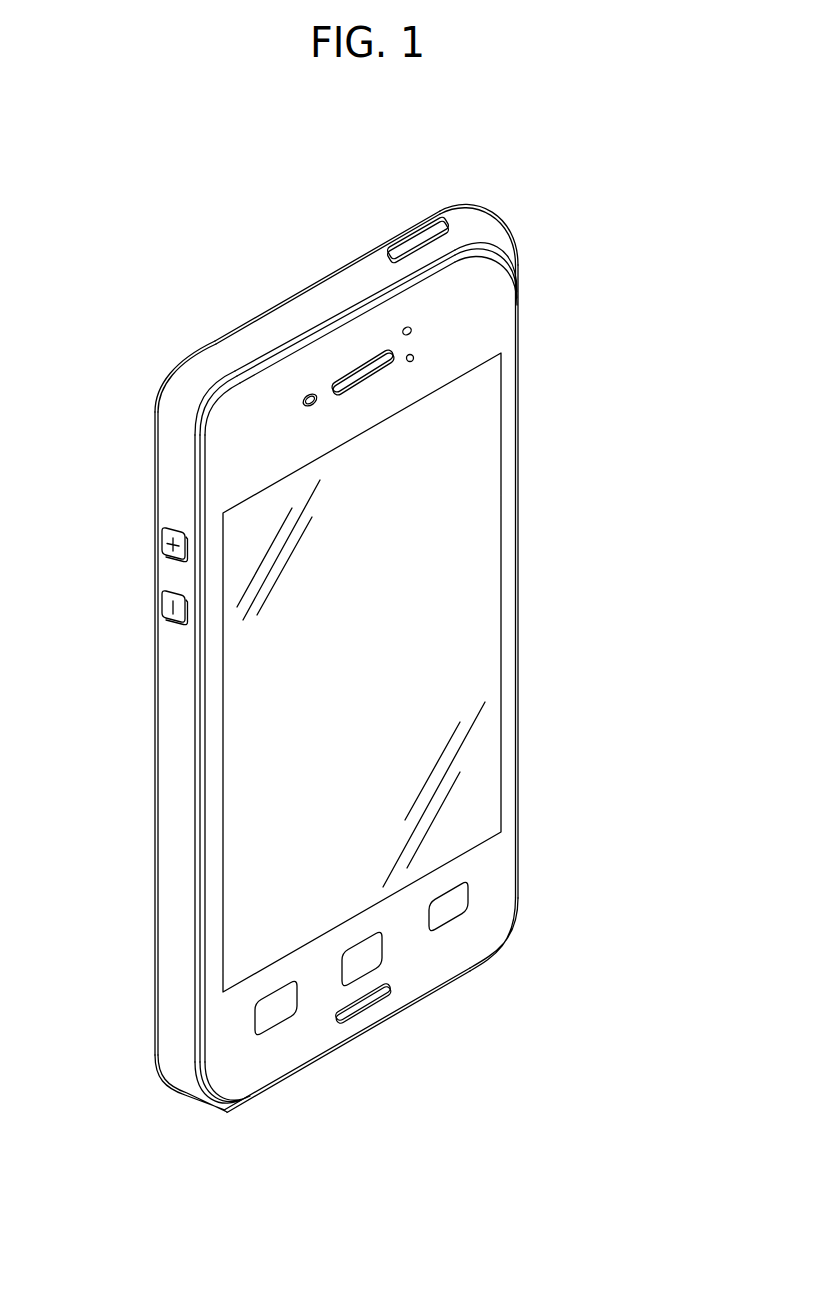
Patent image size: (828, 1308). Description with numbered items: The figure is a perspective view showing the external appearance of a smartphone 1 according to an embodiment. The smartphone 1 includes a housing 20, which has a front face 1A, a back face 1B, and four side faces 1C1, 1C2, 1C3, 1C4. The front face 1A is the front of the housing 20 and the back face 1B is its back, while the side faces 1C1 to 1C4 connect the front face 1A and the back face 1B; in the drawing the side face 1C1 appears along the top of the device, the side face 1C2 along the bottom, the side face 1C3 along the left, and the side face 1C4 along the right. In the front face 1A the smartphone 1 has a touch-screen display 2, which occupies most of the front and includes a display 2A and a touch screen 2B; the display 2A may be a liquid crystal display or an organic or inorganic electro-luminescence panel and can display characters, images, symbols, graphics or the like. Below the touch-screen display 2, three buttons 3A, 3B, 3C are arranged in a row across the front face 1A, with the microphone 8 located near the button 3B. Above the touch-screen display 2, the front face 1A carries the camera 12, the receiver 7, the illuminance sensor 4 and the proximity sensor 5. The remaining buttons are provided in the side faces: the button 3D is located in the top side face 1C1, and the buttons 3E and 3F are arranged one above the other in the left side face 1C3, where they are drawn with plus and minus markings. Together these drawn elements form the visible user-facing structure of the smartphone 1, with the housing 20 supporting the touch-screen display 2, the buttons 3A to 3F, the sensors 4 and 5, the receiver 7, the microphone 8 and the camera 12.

The smartphone 1 is at (631, 292).
The front face 1A is at (248, 405).
The back face 1B is at (150, 456).
The side face 1C1 is at (348, 283).
The side face 1C2 is at (422, 1000).
The side face 1C3 is at (172, 850).
The side face 1C4 is at (520, 476).
The touch-screen display 2 is at (481, 669).
The display 2A is at (278, 550).
The touch screen 2B is at (434, 794).
The button 3A is at (278, 1018).
The button 3B is at (362, 965).
The button 3C is at (450, 908).
The button 3D is at (418, 238).
The button 3E is at (165, 550).
The button 3F is at (163, 613).
The illuminance sensor 4 is at (407, 328).
The proximity sensor 5 is at (414, 358).
The receiver 7 is at (352, 376).
The microphone 8 is at (350, 1008).
The camera 12 is at (311, 397).
The housing 20 is at (170, 488).